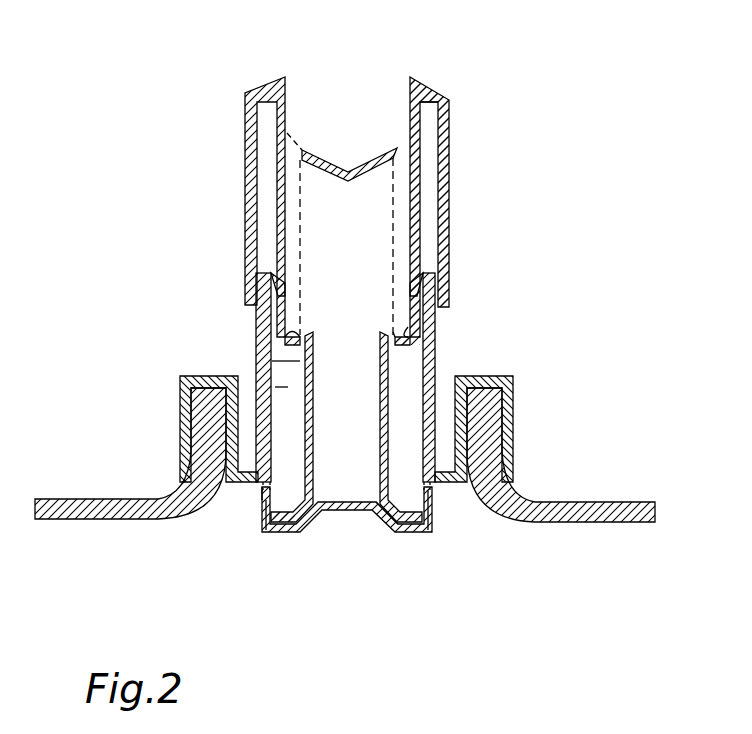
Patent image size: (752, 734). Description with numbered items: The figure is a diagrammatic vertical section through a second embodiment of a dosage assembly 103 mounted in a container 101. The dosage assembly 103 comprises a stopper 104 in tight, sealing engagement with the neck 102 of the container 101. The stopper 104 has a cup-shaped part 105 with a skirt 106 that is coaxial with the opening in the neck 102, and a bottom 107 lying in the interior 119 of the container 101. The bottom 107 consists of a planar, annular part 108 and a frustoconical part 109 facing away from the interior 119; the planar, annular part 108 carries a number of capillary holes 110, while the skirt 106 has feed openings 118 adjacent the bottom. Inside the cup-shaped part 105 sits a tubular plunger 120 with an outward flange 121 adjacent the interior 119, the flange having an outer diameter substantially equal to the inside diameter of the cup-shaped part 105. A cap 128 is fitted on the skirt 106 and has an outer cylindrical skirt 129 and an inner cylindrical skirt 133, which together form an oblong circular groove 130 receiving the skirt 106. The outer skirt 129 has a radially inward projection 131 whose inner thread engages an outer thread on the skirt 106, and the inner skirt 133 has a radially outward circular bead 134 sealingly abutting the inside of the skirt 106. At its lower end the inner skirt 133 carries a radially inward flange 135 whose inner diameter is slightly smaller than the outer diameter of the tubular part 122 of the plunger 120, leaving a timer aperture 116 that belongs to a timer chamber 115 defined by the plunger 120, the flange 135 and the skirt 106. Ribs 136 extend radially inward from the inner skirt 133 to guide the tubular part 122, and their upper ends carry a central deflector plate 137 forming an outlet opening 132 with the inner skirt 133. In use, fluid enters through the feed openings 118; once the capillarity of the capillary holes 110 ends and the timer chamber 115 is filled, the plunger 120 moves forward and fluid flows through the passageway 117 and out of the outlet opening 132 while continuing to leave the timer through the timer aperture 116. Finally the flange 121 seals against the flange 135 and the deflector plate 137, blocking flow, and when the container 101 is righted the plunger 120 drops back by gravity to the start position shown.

The container 101 is at (582, 507).
The neck 102 is at (490, 430).
The dosage assembly 103 is at (451, 156).
The stopper 104 is at (510, 378).
The cup-shaped part 105 is at (262, 513).
The skirt 106 is at (450, 358).
The bottom 107 is at (342, 512).
The planar, annular part 108 is at (290, 528).
The frustoconical part 109 is at (388, 522).
The capillary holes 110 is at (404, 524).
The timer chamber 115 is at (250, 385).
The timer aperture 116 is at (394, 330).
The passageway 117 is at (358, 411).
The feed openings 118 is at (432, 510).
The interior 119 is at (358, 634).
The tubular plunger 120 is at (256, 362).
The outward flange 121 is at (262, 498).
The tubular part 122 is at (312, 342).
The cap 128 is at (436, 100).
The outer cylindrical skirt 129 is at (446, 199).
The groove 130 is at (428, 226).
The projection 131 is at (438, 297).
The outlet opening 132 is at (295, 133).
The inner cylindrical skirt 133 is at (440, 122).
The circular bead 134 is at (420, 270).
The flange 135 is at (248, 318).
The ribs 136 is at (402, 158).
The central deflector plate 137 is at (365, 170).